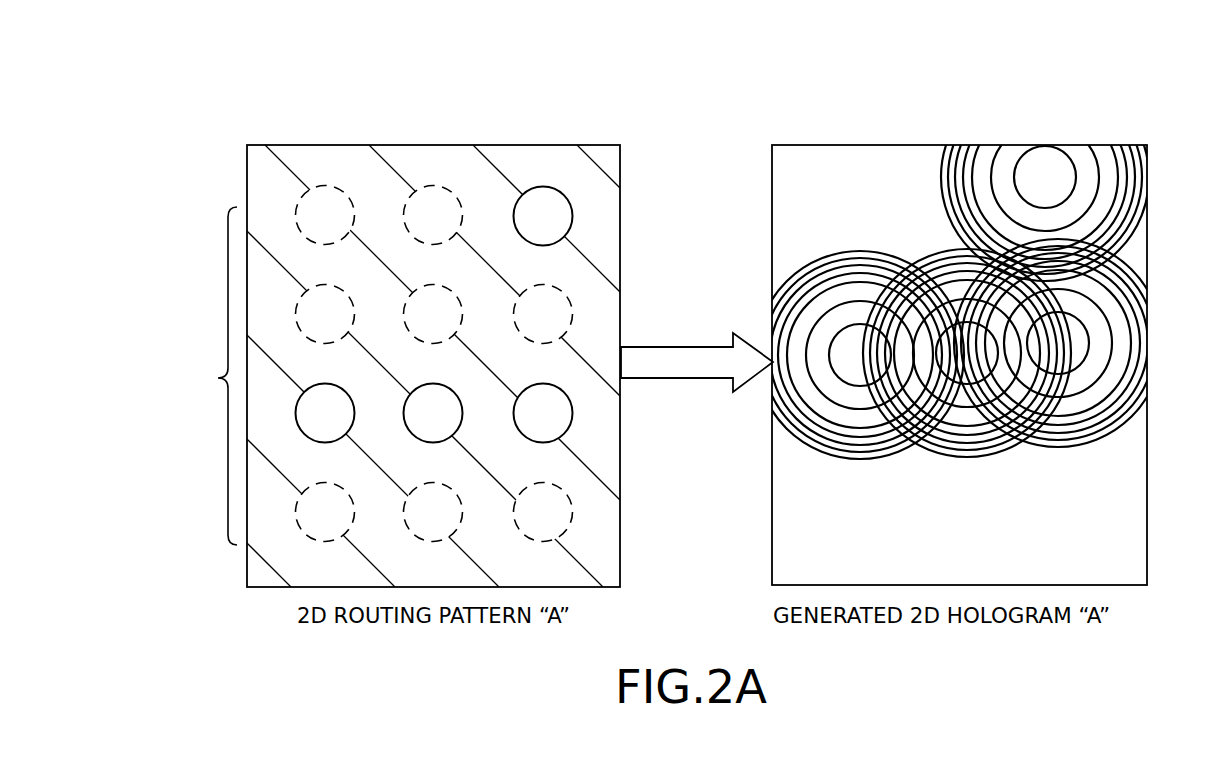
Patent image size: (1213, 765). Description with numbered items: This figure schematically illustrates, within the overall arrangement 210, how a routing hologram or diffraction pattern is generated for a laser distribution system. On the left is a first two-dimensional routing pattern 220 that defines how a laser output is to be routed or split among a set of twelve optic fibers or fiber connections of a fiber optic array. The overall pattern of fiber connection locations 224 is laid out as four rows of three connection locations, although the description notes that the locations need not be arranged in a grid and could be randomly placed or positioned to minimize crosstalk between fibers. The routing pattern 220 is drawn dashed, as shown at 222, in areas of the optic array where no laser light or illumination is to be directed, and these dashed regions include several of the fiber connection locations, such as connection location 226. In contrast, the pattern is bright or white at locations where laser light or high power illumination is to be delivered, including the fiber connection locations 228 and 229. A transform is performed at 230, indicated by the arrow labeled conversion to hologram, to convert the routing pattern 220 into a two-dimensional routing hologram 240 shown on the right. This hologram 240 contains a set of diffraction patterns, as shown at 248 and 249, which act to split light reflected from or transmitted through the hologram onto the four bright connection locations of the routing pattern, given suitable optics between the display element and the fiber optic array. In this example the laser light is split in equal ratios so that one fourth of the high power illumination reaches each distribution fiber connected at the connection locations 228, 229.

The 2D routing pattern system 210 is at (226, 102).
The 2D routing pattern 220 is at (425, 110).
The dashed areas of the 2D routing pattern 222 is at (292, 167).
The pattern of fiber connection locations 224 is at (149, 376).
The connection location 226 is at (447, 188).
The fiber connection location 228 is at (558, 190).
The fiber connection location 229 is at (563, 392).
The transform 230 is at (690, 347).
The 2D routing hologram 240 is at (998, 126).
The diffraction pattern 248 is at (1065, 157).
The diffraction pattern 249 is at (1088, 333).